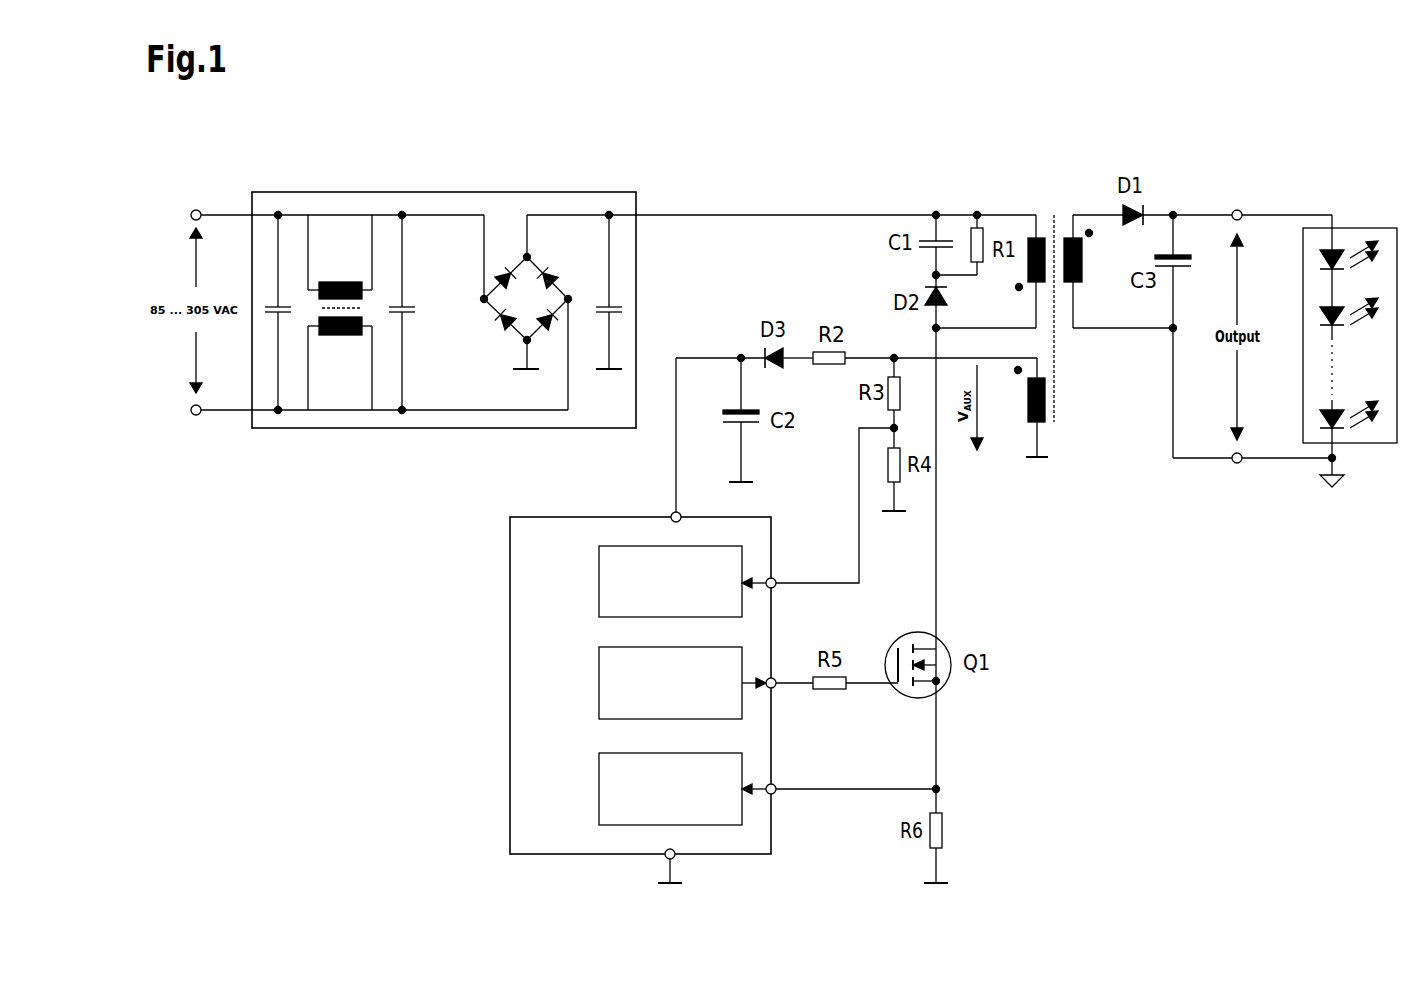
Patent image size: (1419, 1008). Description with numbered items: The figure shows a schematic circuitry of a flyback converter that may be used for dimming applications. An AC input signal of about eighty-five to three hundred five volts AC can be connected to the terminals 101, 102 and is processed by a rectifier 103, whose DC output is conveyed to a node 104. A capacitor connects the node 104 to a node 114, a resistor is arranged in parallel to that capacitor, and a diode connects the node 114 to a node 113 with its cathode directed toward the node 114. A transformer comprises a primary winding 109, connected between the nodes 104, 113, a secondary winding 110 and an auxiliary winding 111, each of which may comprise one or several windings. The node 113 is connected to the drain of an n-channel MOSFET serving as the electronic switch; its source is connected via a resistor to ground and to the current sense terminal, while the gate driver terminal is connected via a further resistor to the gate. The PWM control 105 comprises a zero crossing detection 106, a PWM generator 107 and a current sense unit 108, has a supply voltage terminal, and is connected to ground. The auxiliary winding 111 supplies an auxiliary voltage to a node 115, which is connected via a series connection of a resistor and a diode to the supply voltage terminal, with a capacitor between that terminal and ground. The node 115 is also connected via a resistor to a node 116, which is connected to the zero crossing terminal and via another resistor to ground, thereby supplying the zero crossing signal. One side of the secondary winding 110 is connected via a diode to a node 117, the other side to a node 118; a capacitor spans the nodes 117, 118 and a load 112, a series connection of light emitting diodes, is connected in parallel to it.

The terminal 101 is at (200, 215).
The terminal 102 is at (200, 410).
The rectifier 103 is at (517, 428).
The node 104 is at (935, 202).
The PWM control 105 is at (625, 689).
The zero crossing detection 106 is at (599, 580).
The PWM generator 107 is at (599, 680).
The current sense unit 108 is at (599, 788).
The primary winding 109 is at (1043, 238).
The secondary winding 110 is at (1091, 271).
The auxiliary winding 111 is at (1020, 407).
The load 112 is at (1352, 228).
The node 113 is at (939, 327).
The node 114 is at (918, 272).
The node 115 is at (894, 343).
The node 116 is at (911, 428).
The node 117 is at (1177, 201).
The node 118 is at (1154, 341).